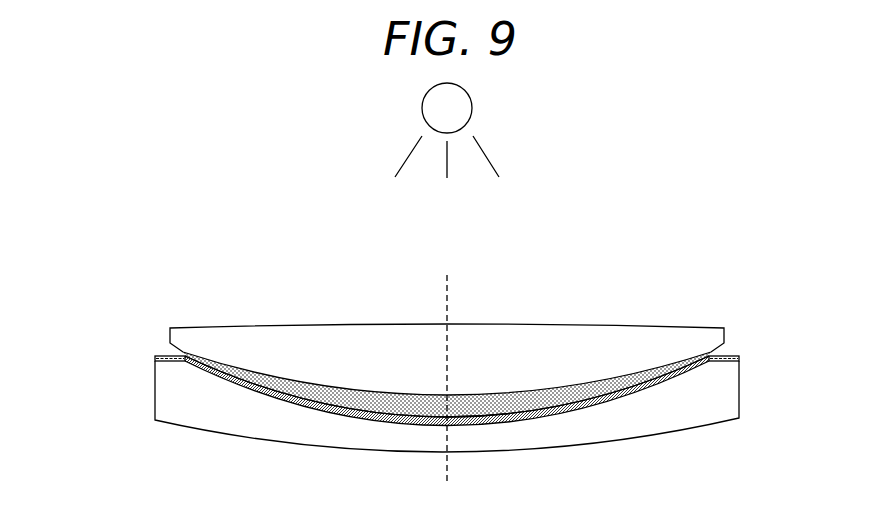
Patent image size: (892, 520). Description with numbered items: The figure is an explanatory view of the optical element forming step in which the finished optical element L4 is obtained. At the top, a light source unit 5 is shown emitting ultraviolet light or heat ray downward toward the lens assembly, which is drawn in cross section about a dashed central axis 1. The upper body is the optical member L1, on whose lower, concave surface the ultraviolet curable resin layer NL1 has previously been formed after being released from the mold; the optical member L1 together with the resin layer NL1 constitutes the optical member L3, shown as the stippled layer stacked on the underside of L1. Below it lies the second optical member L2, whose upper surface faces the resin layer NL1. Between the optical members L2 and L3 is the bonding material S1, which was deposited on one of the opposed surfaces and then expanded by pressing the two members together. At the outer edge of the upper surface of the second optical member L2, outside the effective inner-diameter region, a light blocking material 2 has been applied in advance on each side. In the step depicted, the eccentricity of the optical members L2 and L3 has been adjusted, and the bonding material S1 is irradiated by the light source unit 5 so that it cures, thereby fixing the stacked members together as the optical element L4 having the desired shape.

The light source unit 5 is at (472, 106).
The optical axis 1 is at (447, 290).
The light blocking material 2 is at (165, 355).
The optical member L1 is at (516, 333).
The second optical member L2 is at (592, 430).
The optical member L3 is at (697, 327).
The optical element L4 is at (448, 345).
The ultraviolet curable resin layer NL1 is at (590, 383).
The bonding material S1 is at (478, 427).